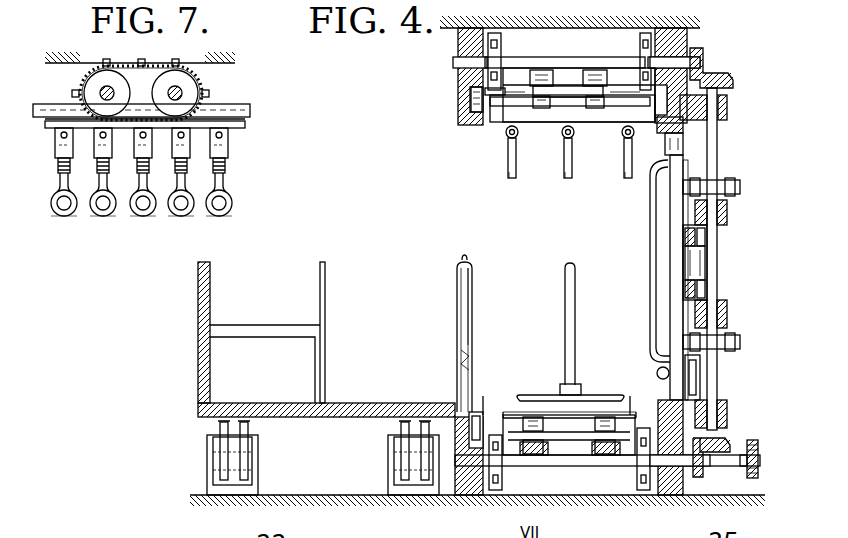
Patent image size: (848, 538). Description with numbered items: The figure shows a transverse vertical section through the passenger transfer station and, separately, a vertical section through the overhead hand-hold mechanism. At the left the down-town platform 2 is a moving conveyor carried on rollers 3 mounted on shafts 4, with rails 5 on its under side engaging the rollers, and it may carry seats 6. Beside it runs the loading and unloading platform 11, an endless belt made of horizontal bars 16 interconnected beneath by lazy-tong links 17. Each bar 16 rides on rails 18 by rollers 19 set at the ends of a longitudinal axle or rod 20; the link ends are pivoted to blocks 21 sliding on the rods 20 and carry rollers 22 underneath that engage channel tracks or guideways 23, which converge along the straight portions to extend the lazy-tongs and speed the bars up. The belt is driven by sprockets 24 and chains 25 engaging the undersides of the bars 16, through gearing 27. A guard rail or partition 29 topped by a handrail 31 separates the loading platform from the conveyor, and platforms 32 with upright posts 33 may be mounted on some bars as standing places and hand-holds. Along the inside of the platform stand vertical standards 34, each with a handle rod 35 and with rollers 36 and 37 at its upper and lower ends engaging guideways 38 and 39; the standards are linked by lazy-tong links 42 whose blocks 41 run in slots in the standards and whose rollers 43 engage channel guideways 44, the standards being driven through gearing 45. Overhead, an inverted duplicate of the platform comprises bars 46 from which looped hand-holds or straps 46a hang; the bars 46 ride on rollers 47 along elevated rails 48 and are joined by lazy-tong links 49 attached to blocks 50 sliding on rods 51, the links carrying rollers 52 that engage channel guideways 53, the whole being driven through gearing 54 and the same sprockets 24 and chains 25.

In FIG. 4, the down-town platform 2 is at (362, 403).
In FIG. 4, the rollers 3 is at (242, 432).
In FIG. 4, the shafts 4 is at (225, 462).
In FIG. 4, the rails 5 is at (222, 425).
In FIG. 4, the seats 6 is at (300, 332).
In FIG. 4, the loading and unloading platform 11 is at (470, 343).
In FIG. 4, the bars 16 is at (584, 400).
In FIG. 4, the lazy-tong links 17 is at (574, 455).
In FIG. 4, the rails 18 is at (468, 442).
In FIG. 4, the rollers 19 is at (484, 396).
In FIG. 4, the axle or rod 20 is at (512, 414).
In FIG. 4, the blocks 21 is at (537, 418).
In FIG. 4, the rollers 22 is at (530, 454).
In FIG. 4, the channel tracks or guideways 23 is at (538, 455).
In FIG. 7, the sprockets 24 is at (93, 82).
In FIG. 4, the sprockets 24 is at (493, 78).
In FIG. 7, the chains 25 is at (159, 66).
In FIG. 4, the chains 25 is at (488, 42).
In FIG. 4, the gearing 27 is at (753, 440).
In FIG. 4, the guard rail or partition 29 is at (458, 310).
In FIG. 4, the handrail 31 is at (462, 260).
In FIG. 4, the platforms 32 is at (571, 387).
In FIG. 4, the posts 33 is at (565, 293).
In FIG. 4, the vertical standards 34 is at (672, 340).
In FIG. 4, the handle rod 35 is at (653, 212).
In FIG. 4, the rollers 36 is at (693, 277).
In FIG. 4, the rollers 37 is at (700, 373).
In FIG. 4, the guideway 38 is at (688, 143).
In FIG. 4, the guideway 39 is at (700, 395).
In FIG. 4, the blocks 41 is at (687, 265).
In FIG. 4, the lazy-tong links 42 is at (688, 267).
In FIG. 4, the rollers 43 is at (703, 253).
In FIG. 4, the channel guideways 44 is at (708, 232).
In FIG. 4, the gearing 45 is at (712, 455).
In FIG. 7, the bars 46 is at (228, 151).
In FIG. 4, the bars 46 is at (528, 114).
In FIG. 7, the looped hand-holds or straps 46a is at (232, 202).
In FIG. 4, the looped hand-holds or straps 46a is at (512, 179).
In FIG. 4, the rollers 47 is at (480, 93).
In FIG. 4, the elevated rails 48 is at (482, 110).
In FIG. 7, the lazy-tong links 49 is at (245, 125).
In FIG. 4, the lazy-tong links 49 is at (574, 98).
In FIG. 4, the blocks 50 is at (546, 103).
In FIG. 7, the rods 51 is at (62, 136).
In FIG. 4, the rods 51 is at (517, 100).
In FIG. 7, the rollers 52 is at (246, 107).
In FIG. 4, the rollers 52 is at (537, 70).
In FIG. 7, the channel guideways 53 is at (250, 115).
In FIG. 4, the channel guideways 53 is at (552, 72).
In FIG. 4, the gearing 54 is at (708, 68).